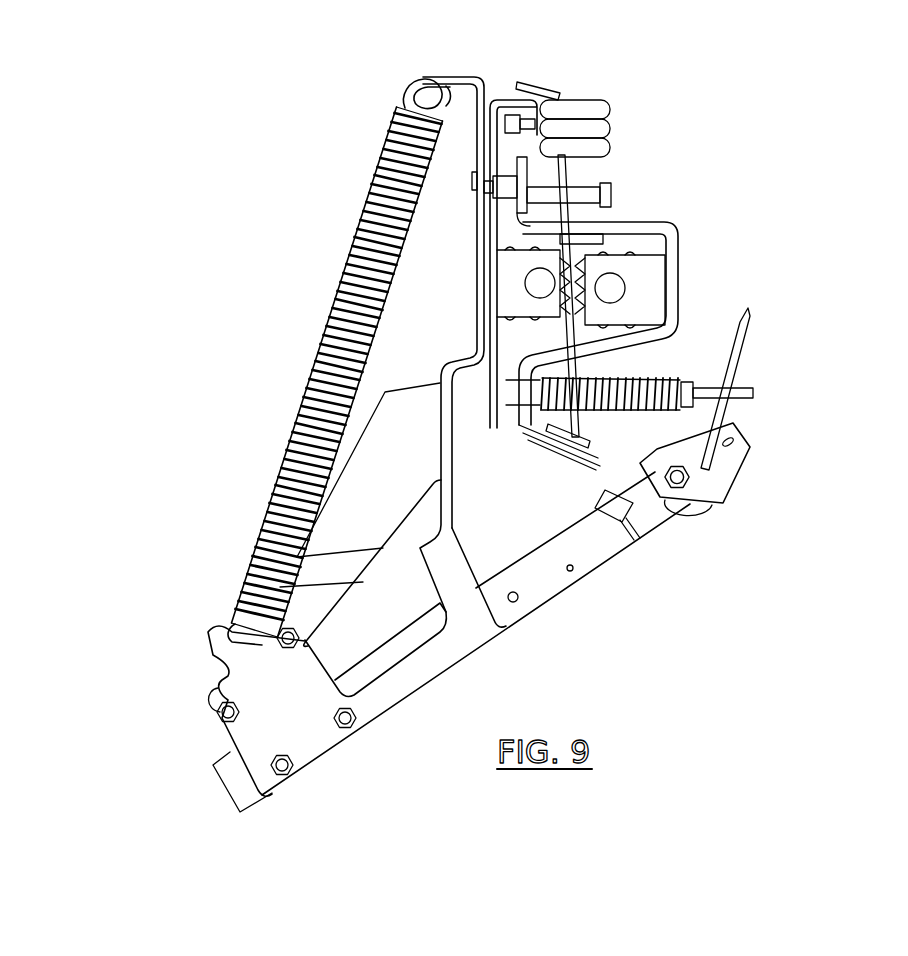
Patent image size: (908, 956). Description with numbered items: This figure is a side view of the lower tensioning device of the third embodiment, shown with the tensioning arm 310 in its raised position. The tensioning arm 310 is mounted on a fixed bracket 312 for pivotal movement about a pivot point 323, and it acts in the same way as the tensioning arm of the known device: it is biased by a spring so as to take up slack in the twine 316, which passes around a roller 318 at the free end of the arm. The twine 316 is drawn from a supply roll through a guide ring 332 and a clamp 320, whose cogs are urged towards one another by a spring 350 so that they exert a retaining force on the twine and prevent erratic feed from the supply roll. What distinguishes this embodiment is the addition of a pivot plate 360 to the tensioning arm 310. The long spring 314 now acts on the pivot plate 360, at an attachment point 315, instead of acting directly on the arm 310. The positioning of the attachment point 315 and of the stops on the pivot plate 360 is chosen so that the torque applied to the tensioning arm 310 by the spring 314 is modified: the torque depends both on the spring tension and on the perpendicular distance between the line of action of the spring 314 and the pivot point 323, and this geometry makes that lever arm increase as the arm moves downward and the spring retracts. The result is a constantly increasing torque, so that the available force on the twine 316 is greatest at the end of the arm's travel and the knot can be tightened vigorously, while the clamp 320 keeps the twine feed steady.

The tensioning arm 310 is at (560, 583).
The fixed bracket 312 is at (402, 425).
The long spring 314 is at (345, 300).
The attachment point 315 is at (215, 717).
The twine 316 is at (745, 355).
The roller 318 is at (700, 492).
The clamp 320 is at (684, 221).
The pivot point 323 is at (313, 630).
The guide ring 332 is at (603, 109).
The spring 350 is at (530, 450).
The pivot plate 360 is at (310, 733).